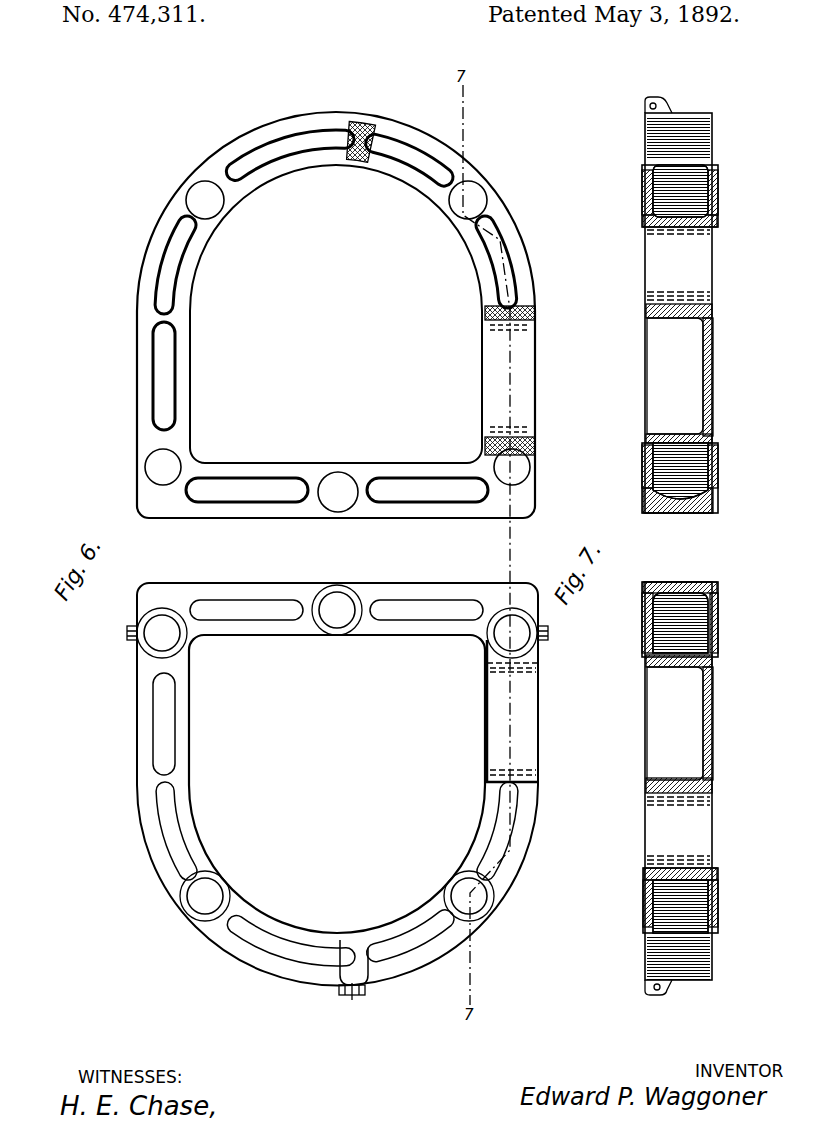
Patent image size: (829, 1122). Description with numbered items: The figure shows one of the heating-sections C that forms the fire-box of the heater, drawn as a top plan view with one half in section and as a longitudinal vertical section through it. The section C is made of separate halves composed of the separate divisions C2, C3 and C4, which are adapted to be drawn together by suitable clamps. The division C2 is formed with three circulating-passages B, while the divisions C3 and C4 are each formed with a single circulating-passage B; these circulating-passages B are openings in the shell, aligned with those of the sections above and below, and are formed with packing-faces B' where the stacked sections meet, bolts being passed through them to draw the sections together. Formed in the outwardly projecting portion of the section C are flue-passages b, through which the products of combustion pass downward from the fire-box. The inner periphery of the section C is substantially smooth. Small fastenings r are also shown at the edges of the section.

In FIG. 6, the flue-passage b is at (397, 147).
In FIG. 6, the circulating-passage B is at (335, 561).
In FIG. 7, the circulating-passage B is at (680, 549).
In FIG. 6, the packing-face B' is at (337, 753).
In FIG. 7, the packing-face B' is at (680, 549).
In FIG. 6, the heating-section C is at (187, 292).
In FIG. 7, the heating-section C is at (650, 262).
In FIG. 6, the section-division C2 is at (280, 463).
In FIG. 7, the section-division C2 is at (680, 584).
In FIG. 6, the section-division C3 is at (188, 356).
In FIG. 6, the section-division C4 is at (486, 308).
In FIG. 7, the section-division C4 is at (712, 346).
In FIG. 6, the bolts r is at (127, 636).
In FIG. 7, the bolts r is at (653, 100).